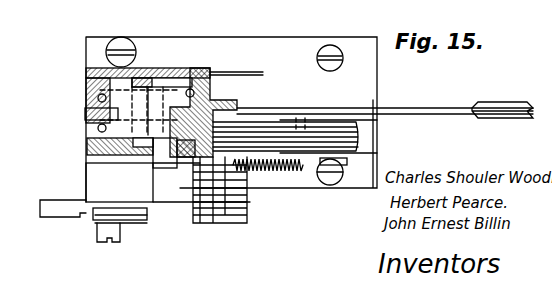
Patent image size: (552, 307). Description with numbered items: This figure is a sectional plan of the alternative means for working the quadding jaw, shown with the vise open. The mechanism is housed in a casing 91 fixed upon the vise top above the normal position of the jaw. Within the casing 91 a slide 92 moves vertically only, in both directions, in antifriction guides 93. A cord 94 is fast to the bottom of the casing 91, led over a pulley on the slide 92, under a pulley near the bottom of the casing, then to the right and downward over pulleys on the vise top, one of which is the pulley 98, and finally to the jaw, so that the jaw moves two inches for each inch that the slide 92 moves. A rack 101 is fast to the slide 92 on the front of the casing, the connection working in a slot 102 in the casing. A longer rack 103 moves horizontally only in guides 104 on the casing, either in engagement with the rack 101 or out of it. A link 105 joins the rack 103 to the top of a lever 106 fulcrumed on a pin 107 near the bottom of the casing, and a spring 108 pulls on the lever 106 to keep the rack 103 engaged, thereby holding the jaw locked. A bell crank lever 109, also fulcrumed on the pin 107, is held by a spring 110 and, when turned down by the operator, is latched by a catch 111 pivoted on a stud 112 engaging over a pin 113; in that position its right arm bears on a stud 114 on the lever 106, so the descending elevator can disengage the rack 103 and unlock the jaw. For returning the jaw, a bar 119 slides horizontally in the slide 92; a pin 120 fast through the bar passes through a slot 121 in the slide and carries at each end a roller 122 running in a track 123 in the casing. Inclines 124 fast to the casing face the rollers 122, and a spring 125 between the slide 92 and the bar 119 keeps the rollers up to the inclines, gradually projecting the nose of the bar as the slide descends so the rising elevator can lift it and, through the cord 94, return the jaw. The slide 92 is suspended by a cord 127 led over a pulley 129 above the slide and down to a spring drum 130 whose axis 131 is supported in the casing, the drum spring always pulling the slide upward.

The casing 91 is at (150, 70).
The slide 92 is at (88, 162).
The antifriction guides 93 is at (197, 68).
The cord 94 is at (403, 109).
The pulley 98 is at (480, 104).
The rack 101 is at (165, 210).
The slot 102 is at (213, 220).
The longer rack 103 is at (95, 175).
The guides 104 is at (215, 246).
The link 105 is at (145, 221).
The lever 106 is at (256, 190).
The pin 107 is at (230, 222).
The spring 108 is at (300, 176).
The bell crank lever 109 is at (50, 217).
The spring 110 is at (165, 225).
The catch 111 is at (95, 228).
The stud 112 is at (105, 243).
The pin 113 is at (97, 235).
The stud 114 is at (242, 207).
The bar 119 is at (86, 112).
The pin 120 is at (100, 90).
The slot 121 is at (100, 124).
The roller 122 is at (125, 240).
The track 123 is at (171, 78).
The inclines 124 is at (85, 28).
The spring 125 is at (215, 100).
The cord 127 is at (237, 108).
The pulley 129 is at (243, 72).
The spring drum 130 is at (372, 126).
The axis 131 is at (300, 130).